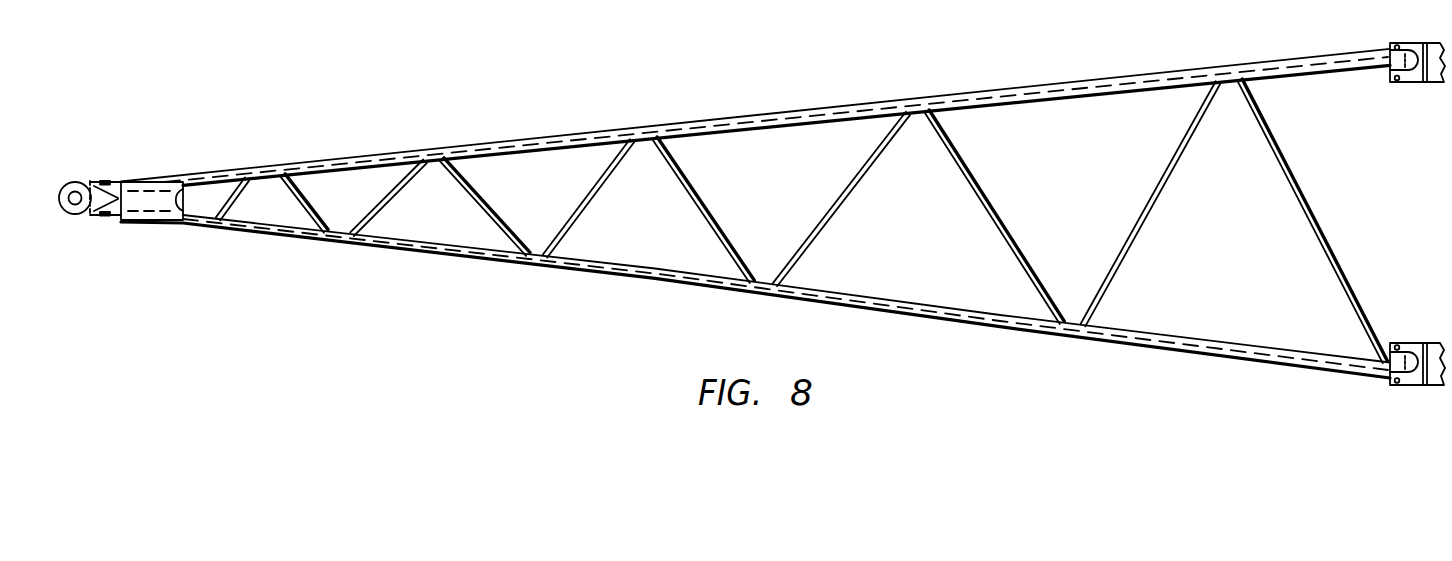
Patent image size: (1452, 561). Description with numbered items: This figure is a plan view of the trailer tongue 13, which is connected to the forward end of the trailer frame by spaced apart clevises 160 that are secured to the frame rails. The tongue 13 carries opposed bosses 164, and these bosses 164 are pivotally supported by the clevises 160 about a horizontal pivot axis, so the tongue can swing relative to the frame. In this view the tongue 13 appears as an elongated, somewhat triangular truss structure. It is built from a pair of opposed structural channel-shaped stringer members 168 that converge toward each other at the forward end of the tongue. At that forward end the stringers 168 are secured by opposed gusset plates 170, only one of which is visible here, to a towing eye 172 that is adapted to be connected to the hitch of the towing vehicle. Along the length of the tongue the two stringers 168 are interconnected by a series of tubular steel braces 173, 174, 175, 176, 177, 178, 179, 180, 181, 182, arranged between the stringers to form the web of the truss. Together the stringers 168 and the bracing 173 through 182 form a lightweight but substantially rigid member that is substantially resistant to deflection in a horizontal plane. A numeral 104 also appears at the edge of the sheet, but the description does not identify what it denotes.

The tongue 13 is at (1332, 56).
The boom 104 is at (506, 3).
The clevis 160 is at (1420, 42).
The boss 164 is at (1402, 68).
The stringer member 168 is at (796, 110).
The gusset plate 170 is at (158, 205).
The towing eye 172 is at (80, 215).
The tubular steel bracing 173 is at (258, 224).
The tubular steel bracing 174 is at (308, 198).
The tubular steel bracing 175 is at (406, 184).
The tubular steel bracing 176 is at (492, 206).
The tubular steel bracing 177 is at (607, 187).
The tubular steel bracing 178 is at (727, 237).
The tubular steel bracing 179 is at (850, 197).
The tubular steel bracing 180 is at (1005, 225).
The tubular steel bracing 181 is at (1163, 197).
The tubular steel bracing 182 is at (1325, 232).